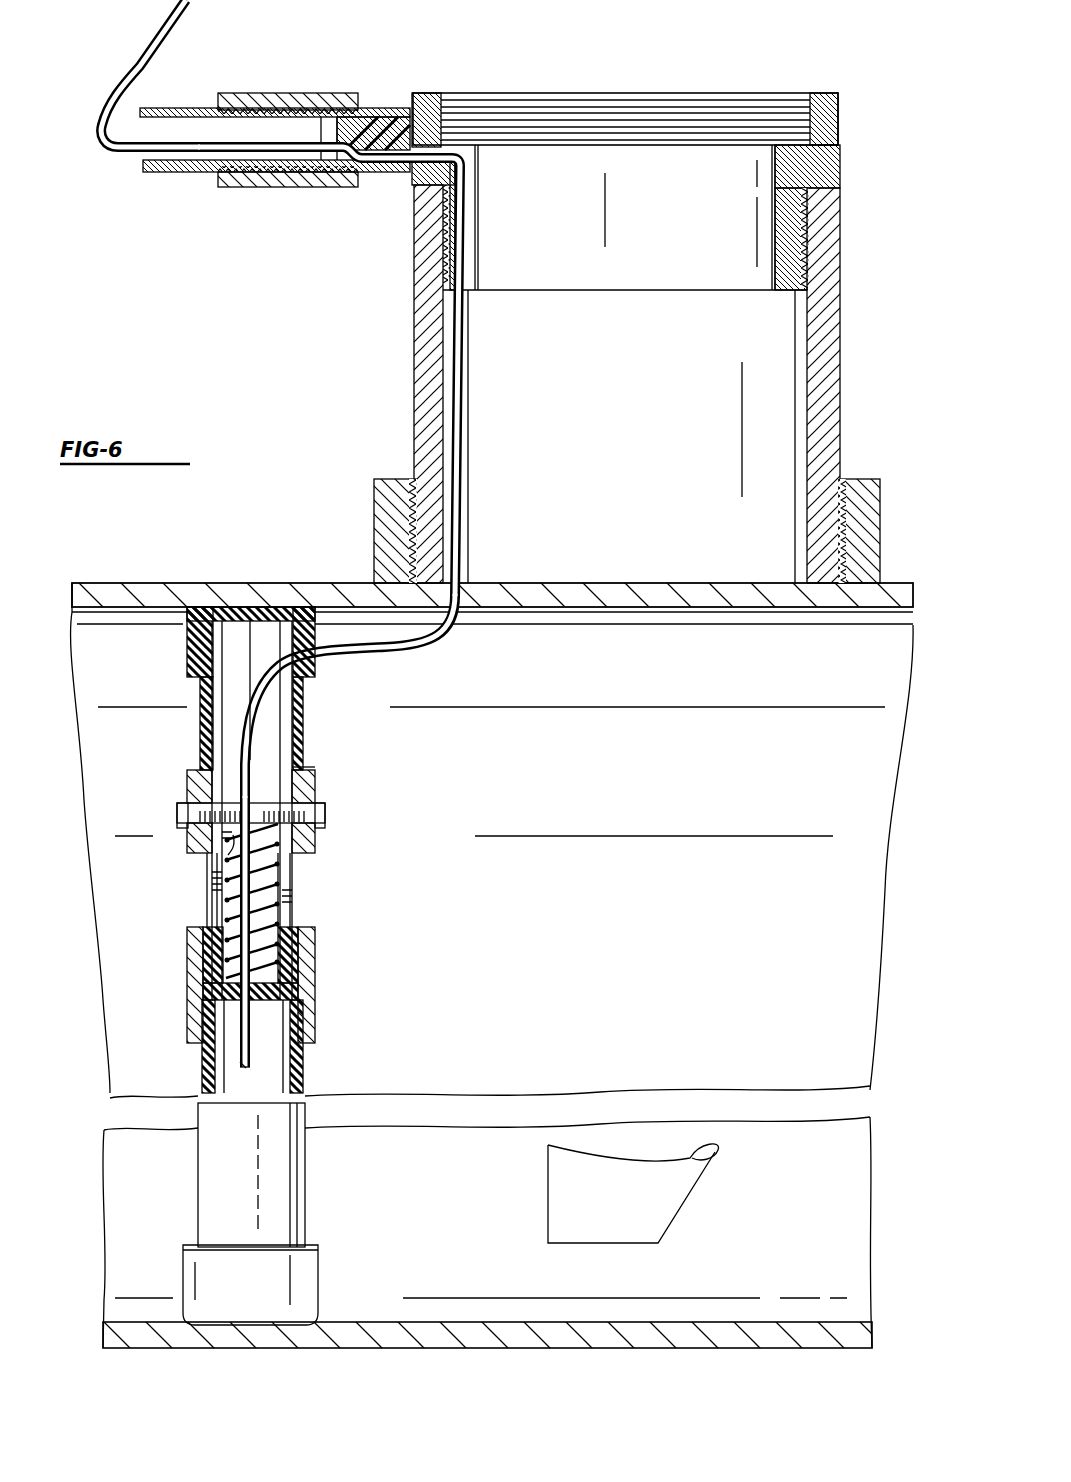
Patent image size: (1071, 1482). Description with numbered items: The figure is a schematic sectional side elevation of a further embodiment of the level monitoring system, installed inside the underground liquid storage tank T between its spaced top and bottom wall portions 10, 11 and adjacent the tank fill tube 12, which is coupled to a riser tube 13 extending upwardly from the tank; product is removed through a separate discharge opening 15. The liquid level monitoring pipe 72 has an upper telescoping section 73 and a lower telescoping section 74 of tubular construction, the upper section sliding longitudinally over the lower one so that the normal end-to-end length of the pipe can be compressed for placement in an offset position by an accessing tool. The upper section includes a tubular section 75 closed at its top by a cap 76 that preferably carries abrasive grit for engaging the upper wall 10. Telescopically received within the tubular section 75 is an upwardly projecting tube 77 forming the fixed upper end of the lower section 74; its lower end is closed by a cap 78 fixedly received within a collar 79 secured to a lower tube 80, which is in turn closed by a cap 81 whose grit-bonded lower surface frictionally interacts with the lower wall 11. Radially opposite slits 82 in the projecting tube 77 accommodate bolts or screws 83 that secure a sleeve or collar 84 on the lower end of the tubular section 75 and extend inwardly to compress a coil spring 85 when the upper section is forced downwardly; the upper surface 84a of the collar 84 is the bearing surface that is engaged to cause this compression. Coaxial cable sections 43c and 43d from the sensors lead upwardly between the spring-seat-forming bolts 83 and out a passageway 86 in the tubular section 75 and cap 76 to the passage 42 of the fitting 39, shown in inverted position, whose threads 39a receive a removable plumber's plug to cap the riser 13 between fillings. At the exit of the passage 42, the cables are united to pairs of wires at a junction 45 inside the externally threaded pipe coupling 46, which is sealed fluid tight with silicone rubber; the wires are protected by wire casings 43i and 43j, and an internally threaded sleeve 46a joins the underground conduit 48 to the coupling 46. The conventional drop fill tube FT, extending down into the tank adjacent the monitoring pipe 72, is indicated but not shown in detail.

The top wall portion 10 is at (214, 583).
The bottom wall portion 11 is at (500, 1322).
The tank fill tube 12 is at (838, 605).
The riser tube 13 is at (412, 310).
The discharge opening 15 is at (385, 525).
The fitting 39 is at (838, 172).
The threads 39a is at (838, 122).
The passage 42 is at (470, 150).
The wire casing 43i is at (130, 48).
The wire casing 43j is at (172, 42).
The coaxial cable section 43c is at (246, 1070).
The coaxial cable section 43d is at (251, 1035).
The junction 45 is at (362, 108).
The pipe coupling 46 is at (383, 185).
The internally threaded sleeve 46a is at (282, 93).
The underground conduit 48 is at (197, 178).
The liquid level monitoring pipe 72 is at (304, 711).
The upper telescoping section 73 is at (200, 714).
The lower telescoping section 74 is at (200, 1060).
The tubular section 75 is at (200, 694).
The cap 76 is at (187, 650).
The upwardly projecting tube 77 is at (297, 888).
The cap 78 is at (315, 967).
The collar 79 is at (315, 1002).
The lower tube 80 is at (307, 1060).
The cap 81 is at (318, 1282).
The slits 82 is at (295, 915).
The bolts or screws 83 is at (178, 815).
The sleeve or collar 84 is at (315, 784).
The upper surface 84a is at (308, 768).
The coil spring 85 is at (233, 838).
The passageway 86 is at (315, 655).
The underground liquid storage tank T is at (655, 956).
The drop fill tube FT is at (680, 1228).